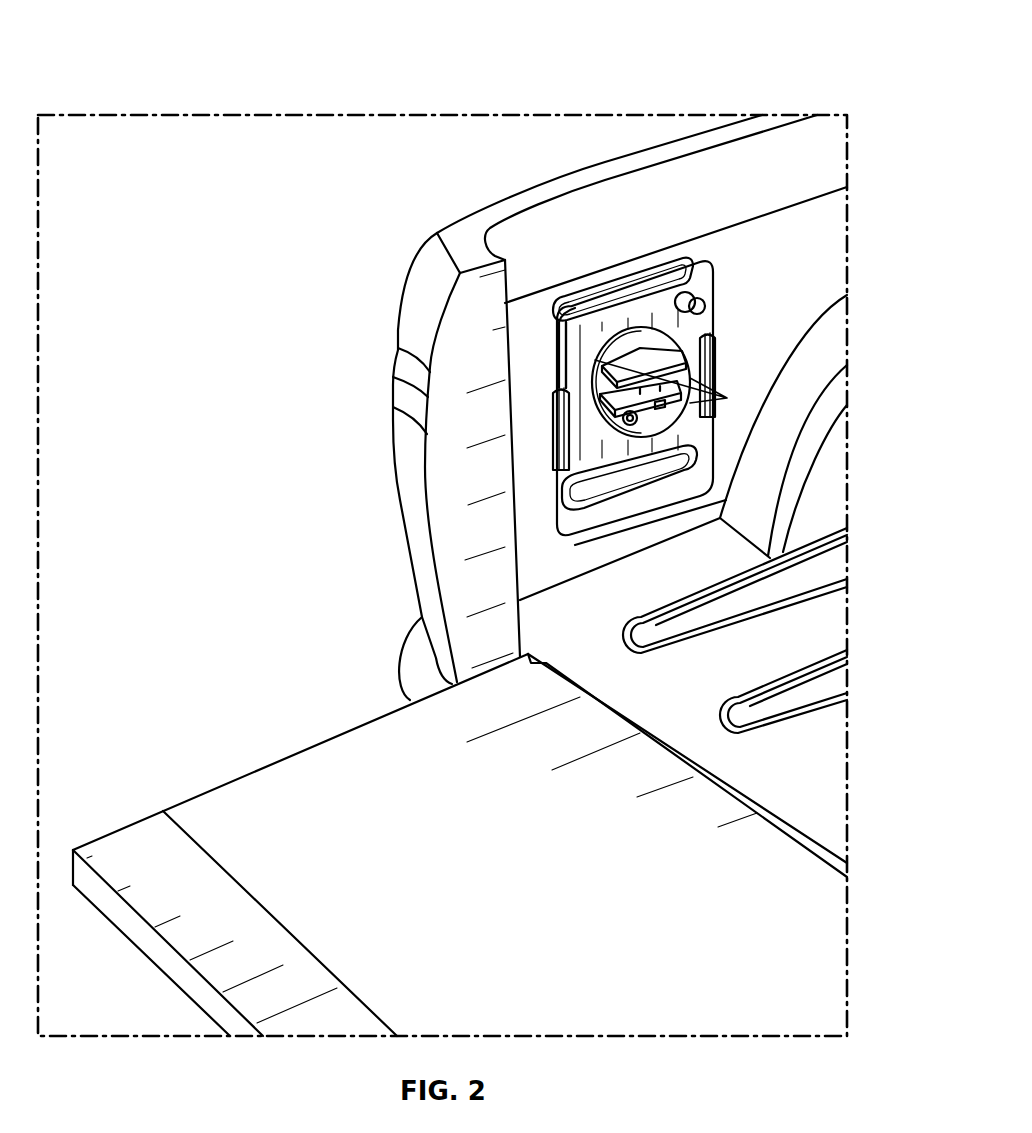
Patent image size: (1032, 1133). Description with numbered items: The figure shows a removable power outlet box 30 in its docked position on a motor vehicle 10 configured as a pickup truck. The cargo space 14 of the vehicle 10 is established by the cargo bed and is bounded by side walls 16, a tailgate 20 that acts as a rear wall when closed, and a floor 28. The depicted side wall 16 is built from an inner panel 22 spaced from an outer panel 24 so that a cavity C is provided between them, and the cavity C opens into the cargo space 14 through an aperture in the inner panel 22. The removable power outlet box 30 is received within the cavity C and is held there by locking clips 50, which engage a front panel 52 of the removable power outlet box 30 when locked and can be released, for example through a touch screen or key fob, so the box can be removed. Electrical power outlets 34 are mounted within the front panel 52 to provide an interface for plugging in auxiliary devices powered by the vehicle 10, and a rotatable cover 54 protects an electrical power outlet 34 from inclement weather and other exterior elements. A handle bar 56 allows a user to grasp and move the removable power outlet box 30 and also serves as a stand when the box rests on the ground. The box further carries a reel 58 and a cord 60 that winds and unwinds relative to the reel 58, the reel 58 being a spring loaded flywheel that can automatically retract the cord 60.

The motor vehicle 10 is at (724, 80).
The cargo space 14 is at (836, 496).
The side wall 16 is at (633, 138).
The tailgate 20 is at (287, 776).
The inner panel 22 is at (832, 227).
The outer panel 24 is at (503, 192).
The floor 28 is at (748, 674).
The removable power outlet box 30 is at (592, 295).
The electrical power outlets 34 is at (679, 387).
The locking clips 50 is at (717, 346).
The front panel 52 is at (708, 303).
The rotatable cover 54 is at (612, 358).
The handle bar 56 is at (614, 295).
The reel 58 is at (555, 368).
The cord 60 is at (555, 332).
The cavity C is at (568, 524).